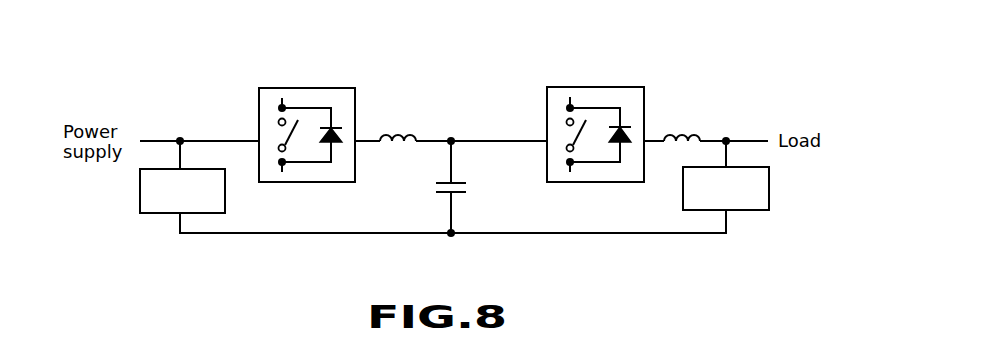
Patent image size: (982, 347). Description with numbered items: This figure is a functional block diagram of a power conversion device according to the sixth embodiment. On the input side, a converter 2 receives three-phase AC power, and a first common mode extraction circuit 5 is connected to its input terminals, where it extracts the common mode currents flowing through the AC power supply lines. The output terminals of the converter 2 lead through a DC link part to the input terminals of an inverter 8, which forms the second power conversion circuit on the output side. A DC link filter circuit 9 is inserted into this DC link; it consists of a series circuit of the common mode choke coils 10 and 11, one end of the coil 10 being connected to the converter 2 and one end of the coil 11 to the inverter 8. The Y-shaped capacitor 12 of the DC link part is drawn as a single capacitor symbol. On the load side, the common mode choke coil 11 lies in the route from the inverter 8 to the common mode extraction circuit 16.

The converter 2 is at (338, 88).
The first common mode extraction circuit 5 is at (140, 190).
The inverter 8 is at (626, 87).
The DC link filter circuit 9 is at (448, 105).
The common mode choke coil 10 is at (395, 130).
The common mode choke coil 11 is at (685, 131).
The Y-shaped capacitor 12 is at (470, 190).
The common mode extraction circuit 16 is at (770, 186).